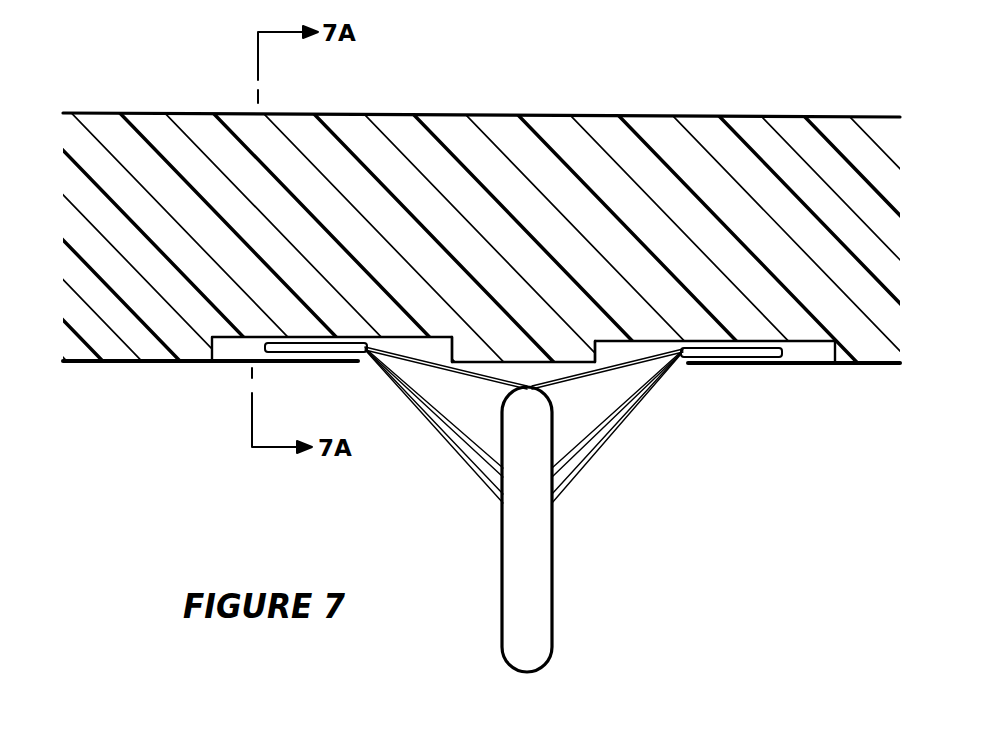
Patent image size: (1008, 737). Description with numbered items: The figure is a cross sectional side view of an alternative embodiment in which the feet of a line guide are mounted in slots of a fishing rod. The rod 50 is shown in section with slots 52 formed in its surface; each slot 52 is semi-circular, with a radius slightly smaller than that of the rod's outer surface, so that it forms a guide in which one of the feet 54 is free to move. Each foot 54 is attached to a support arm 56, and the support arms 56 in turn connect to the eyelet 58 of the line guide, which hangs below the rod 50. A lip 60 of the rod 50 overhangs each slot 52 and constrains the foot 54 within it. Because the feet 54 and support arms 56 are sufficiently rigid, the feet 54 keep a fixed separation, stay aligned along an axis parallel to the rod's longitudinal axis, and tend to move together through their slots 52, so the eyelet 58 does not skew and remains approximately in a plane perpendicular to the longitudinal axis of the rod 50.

The rod 50 is at (559, 209).
The slot 52 is at (615, 348).
The foot 54 is at (300, 347).
The support arm 56 is at (471, 462).
The eyelet 58 is at (548, 568).
The lip 60 is at (285, 363).